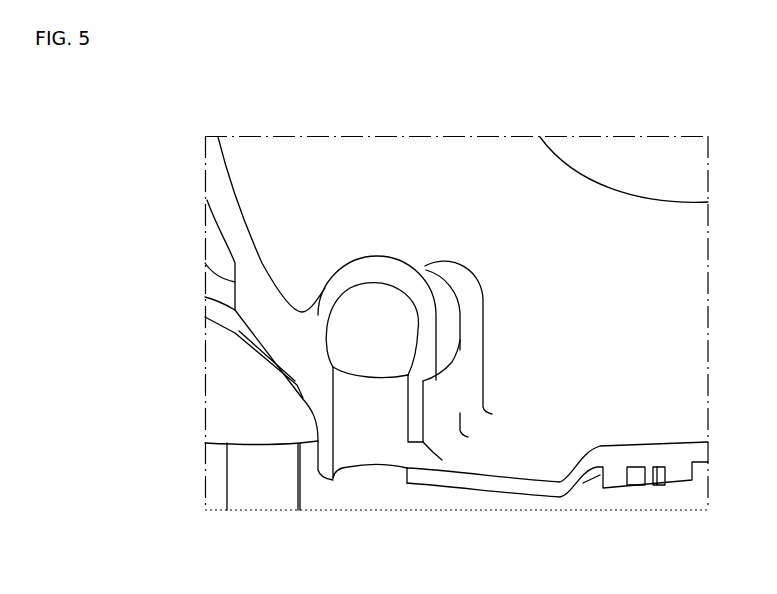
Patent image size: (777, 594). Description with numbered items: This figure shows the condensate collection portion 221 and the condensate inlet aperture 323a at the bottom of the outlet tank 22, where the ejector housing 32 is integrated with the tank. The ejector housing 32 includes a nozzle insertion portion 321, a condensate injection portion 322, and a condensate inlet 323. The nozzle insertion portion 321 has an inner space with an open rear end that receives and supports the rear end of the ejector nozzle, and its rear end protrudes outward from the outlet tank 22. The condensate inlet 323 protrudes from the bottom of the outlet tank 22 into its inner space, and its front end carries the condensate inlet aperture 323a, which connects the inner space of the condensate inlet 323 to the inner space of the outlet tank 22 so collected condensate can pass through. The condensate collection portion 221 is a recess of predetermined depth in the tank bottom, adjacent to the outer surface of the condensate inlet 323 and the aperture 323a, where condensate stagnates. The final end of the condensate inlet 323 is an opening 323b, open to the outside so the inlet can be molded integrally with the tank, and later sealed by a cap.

The outlet tank 22 is at (212, 246).
The condensate collection portion 221 is at (522, 465).
The ejector housing 32 is at (367, 238).
The nozzle insertion portion 321 is at (372, 267).
The condensate injection portion 322 is at (455, 253).
The condensate inlet 323 is at (361, 467).
The condensate inlet aperture 323a is at (423, 448).
The opening 323b is at (347, 472).